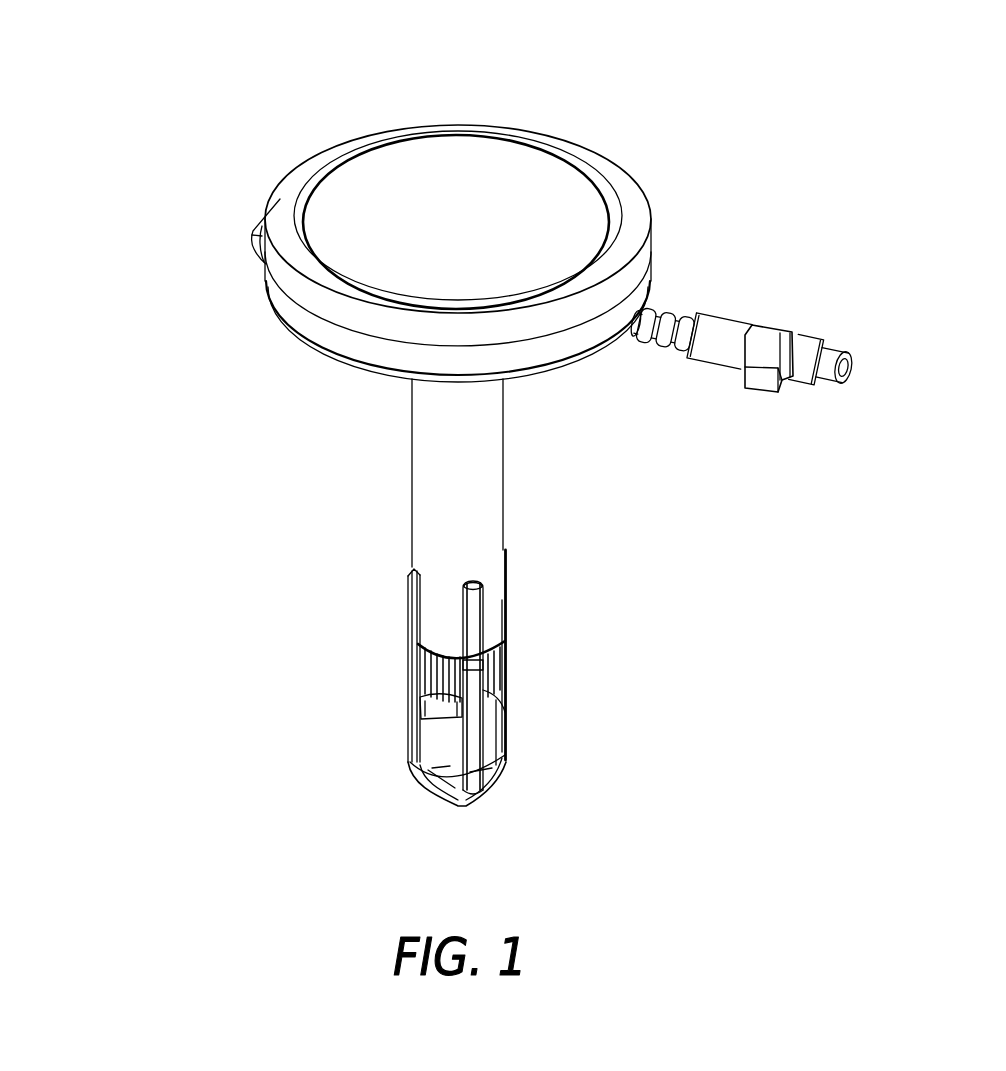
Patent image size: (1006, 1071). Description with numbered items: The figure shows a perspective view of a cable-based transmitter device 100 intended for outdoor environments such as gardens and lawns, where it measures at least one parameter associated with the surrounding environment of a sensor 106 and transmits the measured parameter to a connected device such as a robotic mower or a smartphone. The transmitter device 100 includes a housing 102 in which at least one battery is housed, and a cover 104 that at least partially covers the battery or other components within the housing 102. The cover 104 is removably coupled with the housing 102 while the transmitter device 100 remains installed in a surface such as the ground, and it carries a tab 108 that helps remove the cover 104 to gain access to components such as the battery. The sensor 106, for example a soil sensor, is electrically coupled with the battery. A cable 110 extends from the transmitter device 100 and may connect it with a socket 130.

The transmitter device 100 is at (569, 429).
The housing 102 is at (345, 376).
The cover 104 is at (515, 116).
The sensor 106 is at (512, 673).
The tab 108 is at (251, 240).
The cable 110 is at (628, 328).
The socket 130 is at (762, 353).